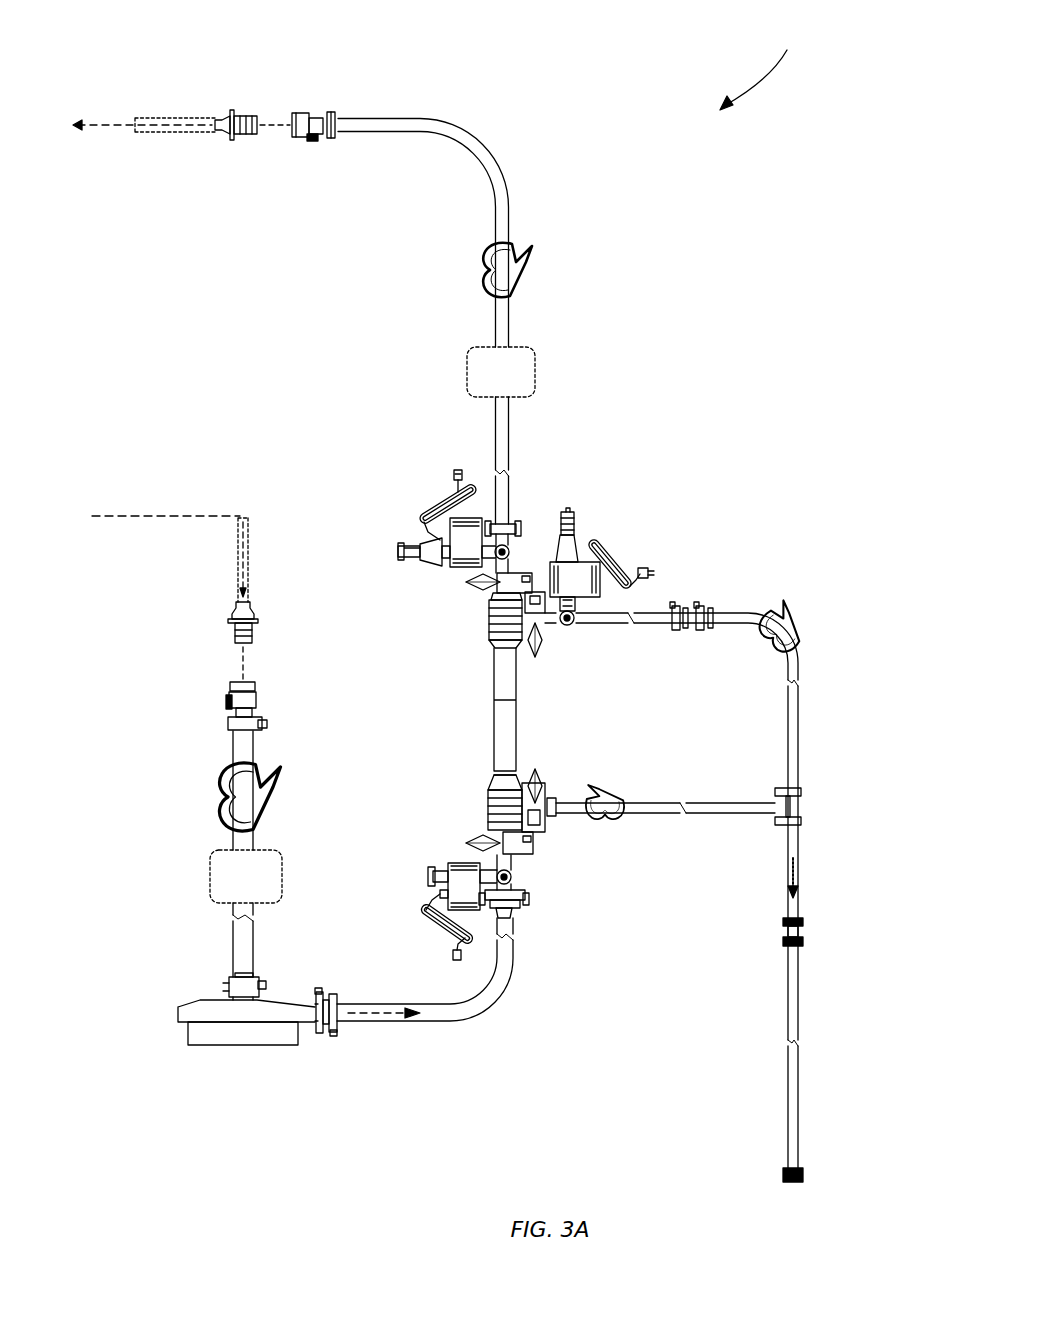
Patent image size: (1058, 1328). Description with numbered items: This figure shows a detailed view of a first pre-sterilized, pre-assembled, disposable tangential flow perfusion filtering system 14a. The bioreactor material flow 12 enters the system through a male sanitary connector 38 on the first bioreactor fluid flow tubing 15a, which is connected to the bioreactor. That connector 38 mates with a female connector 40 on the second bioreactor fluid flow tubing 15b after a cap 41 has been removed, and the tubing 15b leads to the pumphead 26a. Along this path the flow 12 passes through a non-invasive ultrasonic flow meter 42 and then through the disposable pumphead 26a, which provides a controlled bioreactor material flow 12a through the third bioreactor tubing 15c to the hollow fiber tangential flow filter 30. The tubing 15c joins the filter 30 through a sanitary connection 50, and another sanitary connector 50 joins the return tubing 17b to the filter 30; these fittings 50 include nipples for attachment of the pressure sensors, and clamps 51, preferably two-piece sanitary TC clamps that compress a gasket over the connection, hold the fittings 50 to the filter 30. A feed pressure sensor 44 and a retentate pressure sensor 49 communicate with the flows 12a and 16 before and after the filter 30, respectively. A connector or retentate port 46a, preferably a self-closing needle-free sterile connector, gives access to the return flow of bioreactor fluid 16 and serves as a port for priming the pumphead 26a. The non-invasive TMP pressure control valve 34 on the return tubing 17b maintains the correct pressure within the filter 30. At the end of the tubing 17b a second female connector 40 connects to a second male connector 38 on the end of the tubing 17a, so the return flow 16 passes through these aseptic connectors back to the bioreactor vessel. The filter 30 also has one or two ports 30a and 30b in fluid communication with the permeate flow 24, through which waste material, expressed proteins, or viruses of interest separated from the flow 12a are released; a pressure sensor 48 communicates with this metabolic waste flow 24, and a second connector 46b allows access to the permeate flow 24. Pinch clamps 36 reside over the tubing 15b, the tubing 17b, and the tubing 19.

The bioreactor material flow 12 is at (167, 516).
The controlled bioreactor material flow 12a is at (384, 1010).
The tangential flow perfusion filtering system 14a is at (769, 66).
The first bioreactor fluid flow tubing 15a is at (240, 566).
The second bioreactor fluid flow tubing 15b is at (240, 951).
The third bioreactor tubing 15c is at (436, 1020).
The return flow of bioreactor fluid 16 is at (118, 112).
The tubing 17a is at (207, 122).
The return tubing 17b is at (391, 118).
The tubing 19 is at (800, 846).
The permeate flow 24 is at (800, 886).
The pumphead 26a is at (200, 1012).
The hollow fiber tangential flow filter 30 is at (498, 733).
The port 30a is at (521, 800).
The port 30b is at (512, 626).
The non-invasive TMP pressure control valve 34 is at (475, 372).
The pinch clamp 36 is at (528, 283).
The male sanitary connector 38 is at (226, 130).
The female connector 40 is at (316, 136).
The cap 41 is at (297, 136).
The non-invasive ultrasonic flow meter 42 is at (218, 872).
The feed pressure sensor 44 is at (456, 865).
The connector (retentate port) 46a is at (416, 555).
The second connector 46b is at (582, 560).
The pressure sensor 48 is at (630, 577).
The retentate pressure sensor 49 is at (455, 535).
The sanitary connection 50 is at (508, 556).
The clamp 51 is at (474, 583).